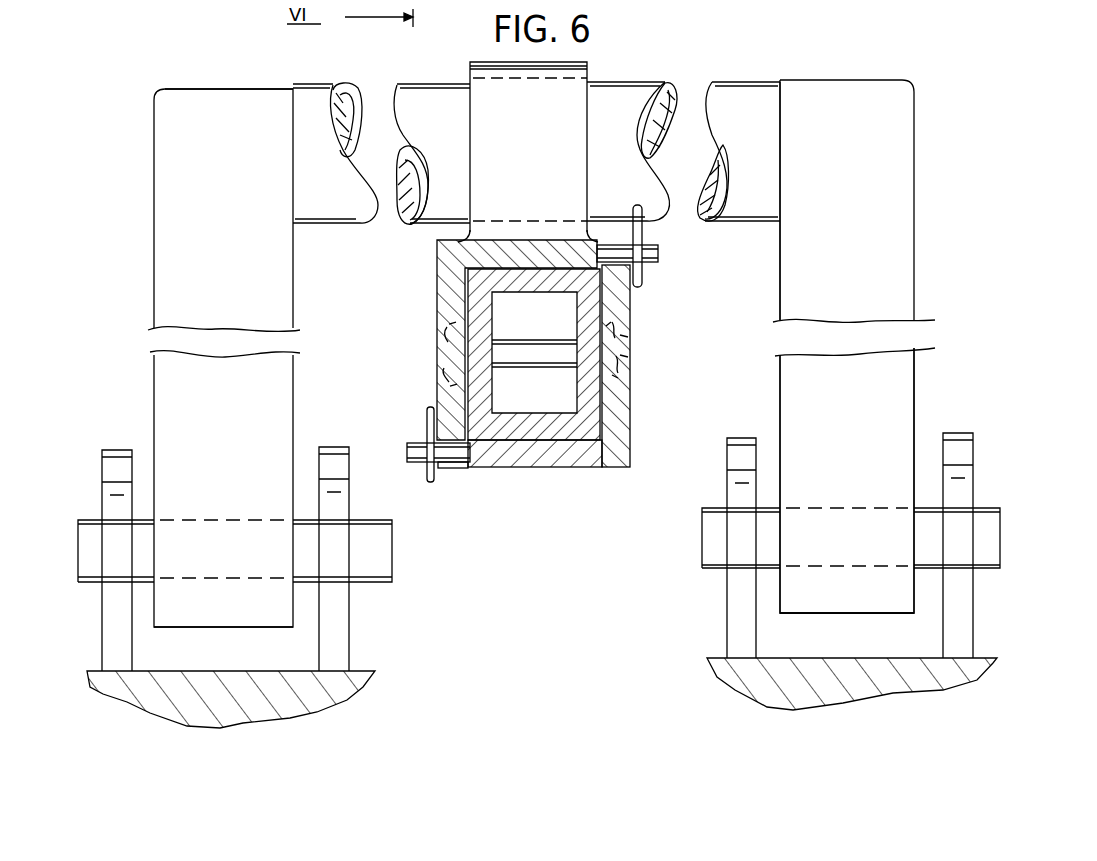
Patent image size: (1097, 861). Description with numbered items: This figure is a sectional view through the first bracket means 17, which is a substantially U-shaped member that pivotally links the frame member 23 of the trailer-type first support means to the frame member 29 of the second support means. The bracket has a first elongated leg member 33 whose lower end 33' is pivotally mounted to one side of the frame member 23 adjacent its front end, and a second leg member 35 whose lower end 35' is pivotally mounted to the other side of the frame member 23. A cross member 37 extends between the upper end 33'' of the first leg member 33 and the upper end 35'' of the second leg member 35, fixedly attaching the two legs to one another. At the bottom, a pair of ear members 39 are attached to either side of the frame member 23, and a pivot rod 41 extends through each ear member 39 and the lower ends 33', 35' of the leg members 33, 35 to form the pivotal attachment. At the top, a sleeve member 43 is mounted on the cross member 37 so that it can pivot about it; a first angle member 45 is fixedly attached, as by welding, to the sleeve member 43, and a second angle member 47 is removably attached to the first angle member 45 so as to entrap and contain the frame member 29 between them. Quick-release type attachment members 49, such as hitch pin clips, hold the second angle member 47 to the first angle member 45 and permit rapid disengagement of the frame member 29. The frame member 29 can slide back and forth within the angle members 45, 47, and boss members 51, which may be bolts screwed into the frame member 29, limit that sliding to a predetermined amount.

The first bracket means 17 is at (905, 62).
The frame member 23 is at (288, 705).
The frame member 29 is at (570, 427).
The first elongated leg member 33 is at (823, 460).
The lower end 33' is at (847, 624).
The upper end 33'' is at (757, 201).
The second leg member 35 is at (250, 358).
The lower end 35' is at (288, 617).
The upper end 35'' is at (264, 183).
The cross member 37 is at (413, 85).
The ear members 39 is at (118, 462).
The pivot rod 41 is at (378, 548).
The sleeve member 43 is at (566, 95).
The first angle member 45 is at (452, 266).
The second angle member 47 is at (627, 418).
The quick-release type attachment member 49 is at (436, 1).
The boss members 51 is at (632, 345).